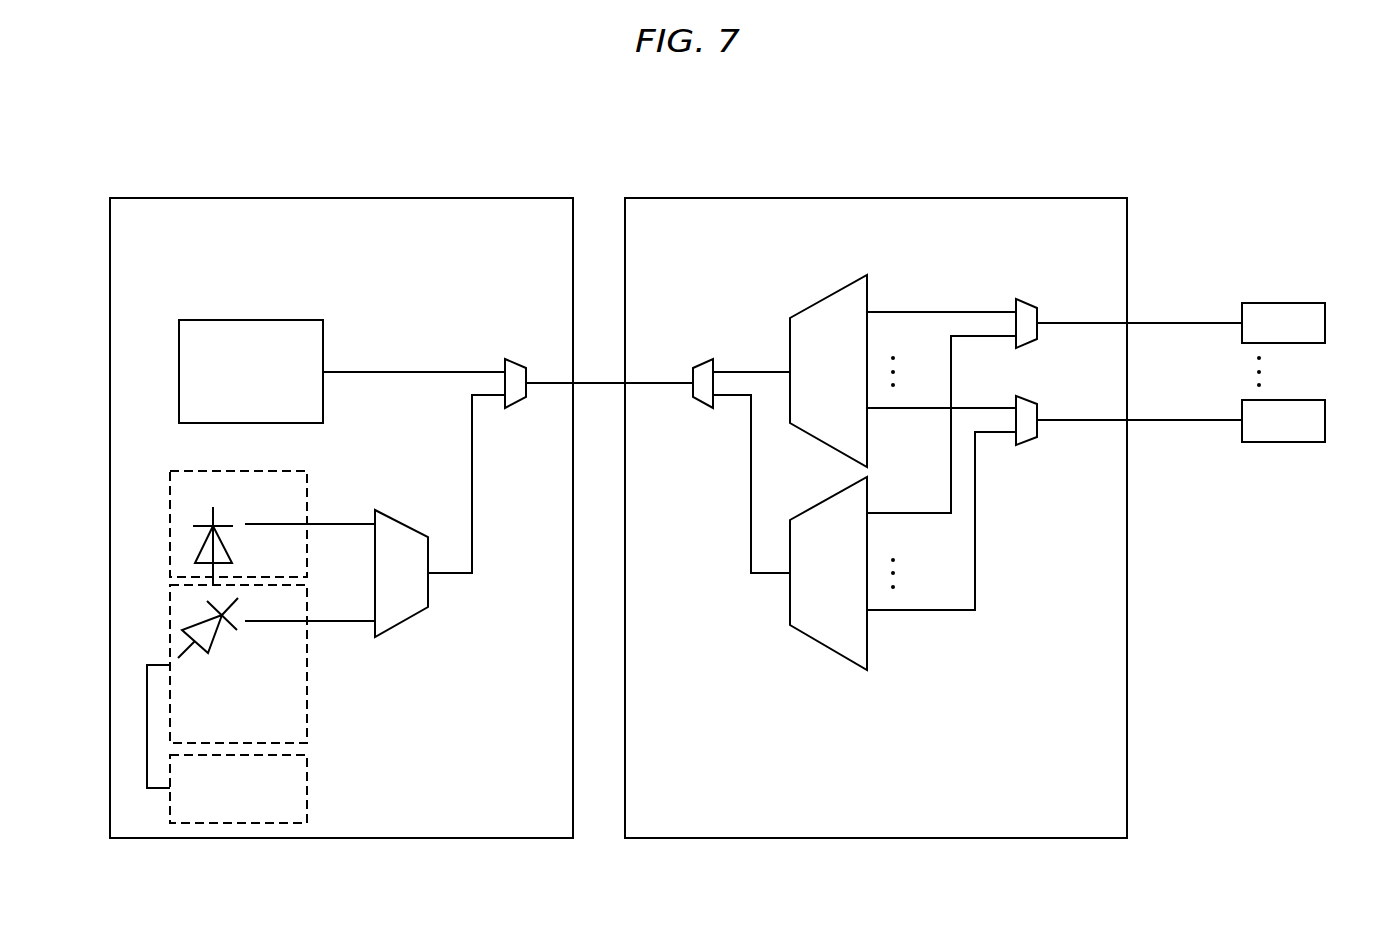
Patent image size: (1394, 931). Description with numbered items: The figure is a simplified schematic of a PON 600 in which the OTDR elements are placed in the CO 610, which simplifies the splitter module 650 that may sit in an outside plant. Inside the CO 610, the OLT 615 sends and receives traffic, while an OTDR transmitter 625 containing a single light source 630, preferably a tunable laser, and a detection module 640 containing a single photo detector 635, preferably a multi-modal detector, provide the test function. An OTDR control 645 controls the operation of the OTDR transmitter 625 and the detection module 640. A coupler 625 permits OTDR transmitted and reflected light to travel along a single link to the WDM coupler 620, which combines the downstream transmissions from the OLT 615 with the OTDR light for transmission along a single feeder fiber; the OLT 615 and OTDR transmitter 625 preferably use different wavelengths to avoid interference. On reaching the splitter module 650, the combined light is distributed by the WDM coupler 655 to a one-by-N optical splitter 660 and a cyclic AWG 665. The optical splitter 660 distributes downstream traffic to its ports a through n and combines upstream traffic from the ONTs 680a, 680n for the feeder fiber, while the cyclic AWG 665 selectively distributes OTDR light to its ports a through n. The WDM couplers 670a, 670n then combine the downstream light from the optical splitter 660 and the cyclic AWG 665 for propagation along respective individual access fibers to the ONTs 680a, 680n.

The PON 600 is at (586, 160).
The CO 610 is at (478, 198).
The OLT 615 is at (296, 320).
The WDM coupler 620 is at (515, 408).
The OTDR transmitter / WDM coupler 625 is at (307, 506).
The light source 630 is at (222, 540).
The photo detector 635 is at (215, 640).
The detection module 640 is at (307, 690).
The OTDR control 645 is at (307, 794).
The splitter module 650 is at (1031, 198).
The WDM coupler 655 is at (697, 404).
The 1×N optical splitter 660 is at (846, 387).
The cyclic AWG 665 is at (846, 587).
The WDM coupler 670a is at (1026, 300).
The WDM coupler 670n is at (1026, 397).
The ONT 680a is at (1288, 303).
The ONT 680n is at (1288, 400).